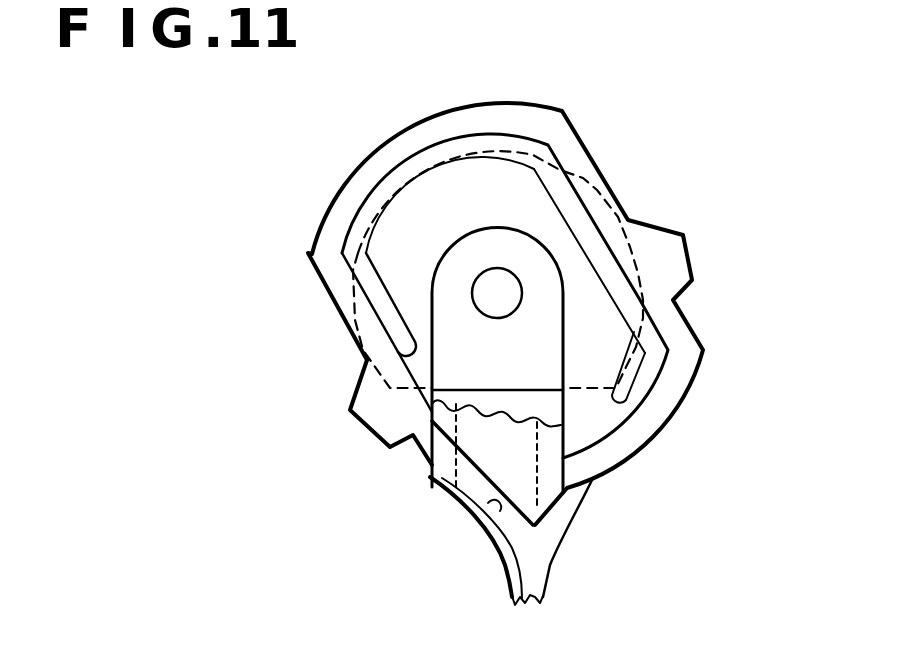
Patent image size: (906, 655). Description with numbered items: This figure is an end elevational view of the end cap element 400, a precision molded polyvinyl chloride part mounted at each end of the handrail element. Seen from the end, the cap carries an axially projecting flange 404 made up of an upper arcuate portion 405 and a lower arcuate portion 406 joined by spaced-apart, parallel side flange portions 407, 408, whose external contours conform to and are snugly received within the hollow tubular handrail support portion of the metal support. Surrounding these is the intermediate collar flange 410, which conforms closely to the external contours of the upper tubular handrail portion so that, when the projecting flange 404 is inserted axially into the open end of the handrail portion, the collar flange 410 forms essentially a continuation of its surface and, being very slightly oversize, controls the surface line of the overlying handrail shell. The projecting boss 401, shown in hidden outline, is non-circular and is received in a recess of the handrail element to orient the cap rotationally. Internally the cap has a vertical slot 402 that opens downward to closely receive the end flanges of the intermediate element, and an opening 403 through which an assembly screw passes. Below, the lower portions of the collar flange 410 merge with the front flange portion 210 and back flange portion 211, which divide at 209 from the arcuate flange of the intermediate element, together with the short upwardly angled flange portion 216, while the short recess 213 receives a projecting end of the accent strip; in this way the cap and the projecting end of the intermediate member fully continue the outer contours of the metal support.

The intermediate collar flange 410 is at (463, 102).
The upper arcuate portion 405 is at (381, 183).
The axially projecting flange 404 is at (487, 138).
The projecting boss 401 is at (583, 178).
The end cap element 400 is at (423, 223).
The side flange portion 408 is at (575, 222).
The lower arcuate portion 406 is at (644, 385).
The side flange portion 407 is at (397, 325).
The opening 403 is at (490, 291).
The vertical slot 402 is at (453, 337).
The short flange portion 216 is at (440, 450).
The front flange portion 210 is at (470, 473).
The short recess 213 is at (508, 515).
The division of the arcuate flange 209 is at (526, 544).
The back flange portion 211 is at (568, 512).